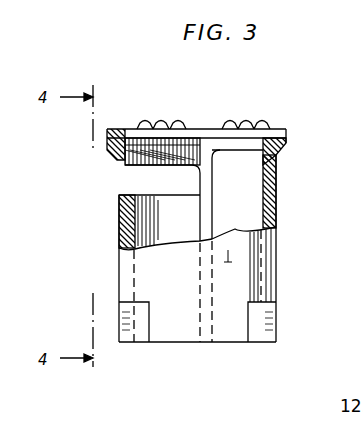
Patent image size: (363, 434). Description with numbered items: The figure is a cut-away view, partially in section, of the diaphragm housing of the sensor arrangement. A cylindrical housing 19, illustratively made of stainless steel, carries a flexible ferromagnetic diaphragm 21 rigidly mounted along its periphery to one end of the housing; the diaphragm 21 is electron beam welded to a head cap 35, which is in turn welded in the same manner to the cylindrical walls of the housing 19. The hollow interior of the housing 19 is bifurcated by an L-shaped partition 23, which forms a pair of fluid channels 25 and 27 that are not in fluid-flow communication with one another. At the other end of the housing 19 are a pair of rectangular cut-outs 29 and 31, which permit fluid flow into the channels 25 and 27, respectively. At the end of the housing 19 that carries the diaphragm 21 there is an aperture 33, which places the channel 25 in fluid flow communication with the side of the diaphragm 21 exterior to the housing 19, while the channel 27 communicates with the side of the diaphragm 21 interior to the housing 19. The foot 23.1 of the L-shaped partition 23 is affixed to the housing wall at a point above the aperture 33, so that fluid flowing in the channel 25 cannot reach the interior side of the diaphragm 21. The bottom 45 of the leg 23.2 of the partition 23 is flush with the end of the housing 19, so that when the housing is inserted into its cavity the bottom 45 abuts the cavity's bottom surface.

The cylindrical housing 19 is at (119, 222).
The flexible diaphragm 21 is at (228, 124).
The L-shaped partition 23 is at (207, 343).
The foot of partition 23.1 is at (158, 158).
The leg of partition 23.2 is at (206, 262).
The fluid channel 25 is at (142, 195).
The fluid channel 27 is at (246, 196).
The rectangular cut-out 29 is at (141, 343).
The rectangular cut-out 31 is at (262, 321).
The aperture 33 is at (152, 178).
The head cap 35 is at (288, 140).
The bottom of partition leg 45 is at (203, 343).